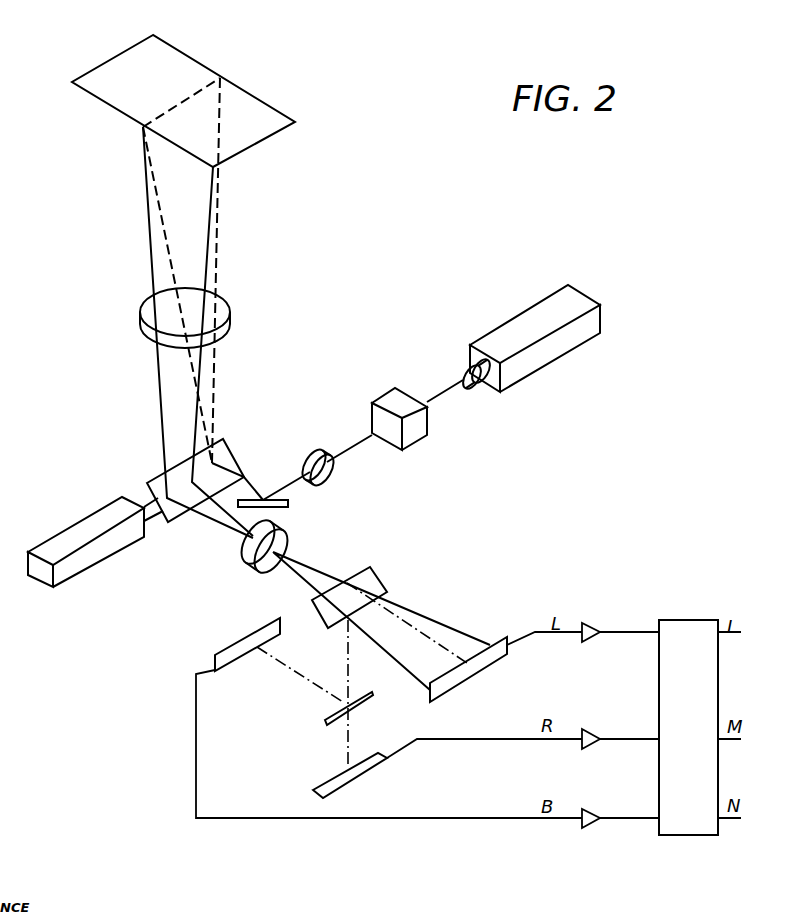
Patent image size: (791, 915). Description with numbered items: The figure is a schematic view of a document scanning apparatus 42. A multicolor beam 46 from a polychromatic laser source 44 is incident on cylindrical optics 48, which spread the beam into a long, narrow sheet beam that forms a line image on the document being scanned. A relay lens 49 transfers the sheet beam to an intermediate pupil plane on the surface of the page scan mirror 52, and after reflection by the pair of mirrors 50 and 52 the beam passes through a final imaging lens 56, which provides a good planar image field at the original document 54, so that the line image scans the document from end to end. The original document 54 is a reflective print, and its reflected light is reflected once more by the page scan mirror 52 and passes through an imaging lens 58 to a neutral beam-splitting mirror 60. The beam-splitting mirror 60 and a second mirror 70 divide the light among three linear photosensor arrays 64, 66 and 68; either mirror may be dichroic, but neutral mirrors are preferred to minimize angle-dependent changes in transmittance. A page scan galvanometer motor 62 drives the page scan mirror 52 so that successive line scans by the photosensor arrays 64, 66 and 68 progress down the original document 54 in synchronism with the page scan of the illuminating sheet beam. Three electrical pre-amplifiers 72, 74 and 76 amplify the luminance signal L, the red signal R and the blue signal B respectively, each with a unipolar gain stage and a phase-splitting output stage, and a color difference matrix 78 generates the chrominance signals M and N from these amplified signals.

The document scanning apparatus 42 is at (346, 206).
The laser source 44 is at (518, 320).
The multicolor beam 46 is at (447, 387).
The cylindrical optics 48 is at (420, 433).
The relay lens 49 is at (333, 470).
The mirror 50 is at (282, 507).
The page scan mirror 52 is at (153, 482).
The original document 54 is at (201, 65).
The final imaging lens 56 is at (226, 308).
The imaging lens 58 is at (247, 557).
The neutral beam-splitting mirror 60 is at (380, 583).
The page scan galvanometer motor 62 is at (107, 553).
The linear photosensor array 64 is at (478, 670).
The linear photosensor array 66 is at (373, 766).
The linear photosensor array 68 is at (233, 661).
The second mirror 70 is at (323, 722).
The pre-amplifier 72 is at (597, 627).
The pre-amplifier 74 is at (597, 733).
The pre-amplifier 76 is at (597, 816).
The color difference matrix 78 is at (688, 613).